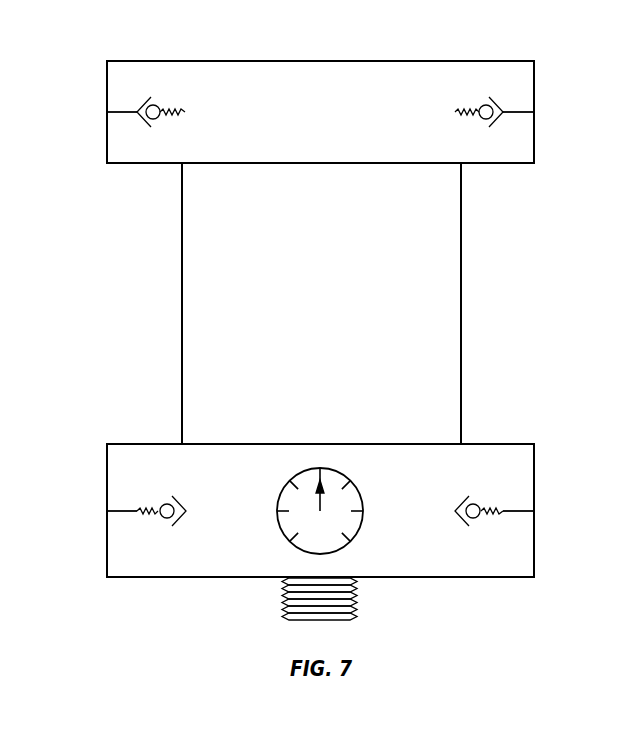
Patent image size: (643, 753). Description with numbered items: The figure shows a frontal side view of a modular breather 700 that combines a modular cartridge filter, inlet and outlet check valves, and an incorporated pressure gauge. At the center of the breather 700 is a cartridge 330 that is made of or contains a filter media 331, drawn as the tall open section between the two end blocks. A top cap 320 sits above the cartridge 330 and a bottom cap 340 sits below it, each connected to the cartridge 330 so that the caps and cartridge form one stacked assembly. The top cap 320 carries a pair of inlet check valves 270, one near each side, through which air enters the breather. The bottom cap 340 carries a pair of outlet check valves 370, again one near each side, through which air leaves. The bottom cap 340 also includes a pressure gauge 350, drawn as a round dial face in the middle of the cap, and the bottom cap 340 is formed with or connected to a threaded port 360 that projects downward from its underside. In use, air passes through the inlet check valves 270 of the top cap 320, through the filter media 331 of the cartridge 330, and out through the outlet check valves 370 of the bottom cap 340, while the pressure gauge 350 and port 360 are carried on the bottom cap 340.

The modular breather 700 is at (338, 33).
The inlet check valves 270 is at (154, 104).
The top cap 320 is at (534, 128).
The cartridge 330 is at (461, 303).
The filter media 331 is at (337, 314).
The bottom cap 340 is at (534, 462).
The pressure gauge 350 is at (283, 530).
The port 360 is at (353, 604).
The outlet check valves 370 is at (148, 514).